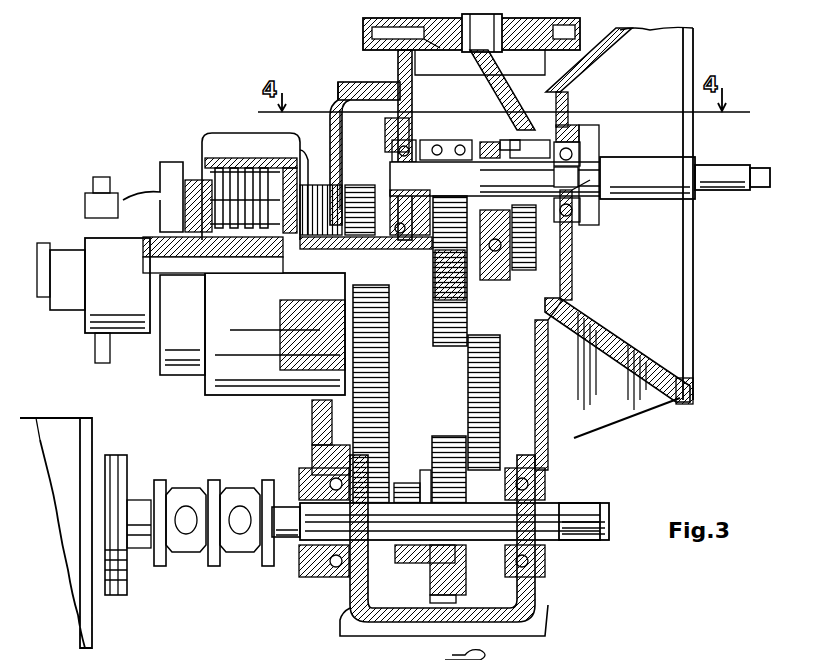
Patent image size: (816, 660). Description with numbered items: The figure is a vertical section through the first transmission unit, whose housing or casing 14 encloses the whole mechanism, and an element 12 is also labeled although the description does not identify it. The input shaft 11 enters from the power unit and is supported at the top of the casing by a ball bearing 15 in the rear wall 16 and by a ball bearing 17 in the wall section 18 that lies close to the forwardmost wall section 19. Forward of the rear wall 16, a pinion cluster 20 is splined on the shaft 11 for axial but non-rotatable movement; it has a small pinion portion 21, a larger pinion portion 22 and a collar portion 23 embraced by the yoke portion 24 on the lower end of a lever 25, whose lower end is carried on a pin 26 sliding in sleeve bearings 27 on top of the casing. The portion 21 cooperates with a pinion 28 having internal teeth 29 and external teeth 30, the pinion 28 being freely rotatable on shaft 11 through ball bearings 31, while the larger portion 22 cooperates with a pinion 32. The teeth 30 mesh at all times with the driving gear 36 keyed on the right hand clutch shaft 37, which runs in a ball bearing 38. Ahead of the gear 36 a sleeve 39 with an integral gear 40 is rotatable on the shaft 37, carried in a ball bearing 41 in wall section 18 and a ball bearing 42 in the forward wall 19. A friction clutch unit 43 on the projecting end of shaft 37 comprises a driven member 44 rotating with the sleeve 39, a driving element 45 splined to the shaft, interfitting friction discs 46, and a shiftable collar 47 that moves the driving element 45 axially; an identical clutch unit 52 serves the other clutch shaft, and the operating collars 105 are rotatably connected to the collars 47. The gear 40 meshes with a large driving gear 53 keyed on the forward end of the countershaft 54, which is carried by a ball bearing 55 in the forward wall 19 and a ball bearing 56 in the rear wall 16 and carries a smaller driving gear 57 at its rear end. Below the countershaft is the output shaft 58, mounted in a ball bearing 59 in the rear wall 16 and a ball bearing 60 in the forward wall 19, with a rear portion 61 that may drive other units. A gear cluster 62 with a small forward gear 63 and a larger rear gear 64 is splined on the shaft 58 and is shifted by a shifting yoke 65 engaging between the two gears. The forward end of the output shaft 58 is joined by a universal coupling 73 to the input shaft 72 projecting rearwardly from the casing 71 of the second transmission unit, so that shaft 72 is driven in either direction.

The input shaft 11 is at (710, 172).
The housing 12 is at (665, 358).
The housing or casing 14 is at (388, 80).
The ball bearing 15 is at (574, 154).
The rear wall 16 is at (574, 262).
The ball bearing 17 is at (392, 150).
The wall section 18 is at (405, 114).
The forwardmost wall section 19 is at (338, 150).
The pinion cluster 20 is at (522, 140).
The small pinion portion 21 is at (486, 142).
The larger pinion portion 22 is at (508, 130).
The collar portion 23 is at (569, 177).
The yoke portion 24 is at (500, 82).
The lever 25 is at (482, 33).
The pin 26 is at (446, 55).
The sleeve bearings 27 is at (366, 22).
The pinion 28 is at (434, 140).
The internal teeth 29 is at (451, 129).
The external teeth 30 is at (456, 138).
The ball bearings 31 is at (415, 165).
The pinion 32 is at (530, 250).
The driving gear 36 is at (448, 350).
The right hand clutch shaft 37 is at (262, 284).
The ball bearing 38 is at (506, 270).
The sleeve 39 is at (326, 230).
The gear 40 is at (366, 256).
The ball bearing 41 is at (410, 231).
The ball bearing 42 is at (345, 195).
The friction clutch unit 43 is at (232, 148).
The housing or driven member 44 is at (246, 160).
The driving element 45 is at (228, 258).
The friction discs or collars 46 is at (206, 158).
The shiftable collar 47 is at (160, 216).
The clutch unit 52 is at (206, 135).
The large driving gear 53 is at (385, 448).
The countershaft 54 is at (312, 415).
The ball bearing 55 is at (312, 445).
The ball bearing 56 is at (548, 410).
The smaller driving gear 57 is at (490, 464).
The output shaft 58 is at (488, 540).
The ball bearing 59 is at (510, 570).
The ball bearing 60 is at (336, 540).
The portion 61 is at (290, 542).
The gear cluster 62 is at (434, 454).
The small forward gear 63 is at (408, 563).
The larger rear gear 64 is at (458, 598).
The shifting yoke 65 is at (422, 478).
The casing 71 is at (42, 424).
The input shaft 72 is at (137, 550).
The universal coupling 73 is at (210, 556).
The operating collars 105 is at (90, 232).